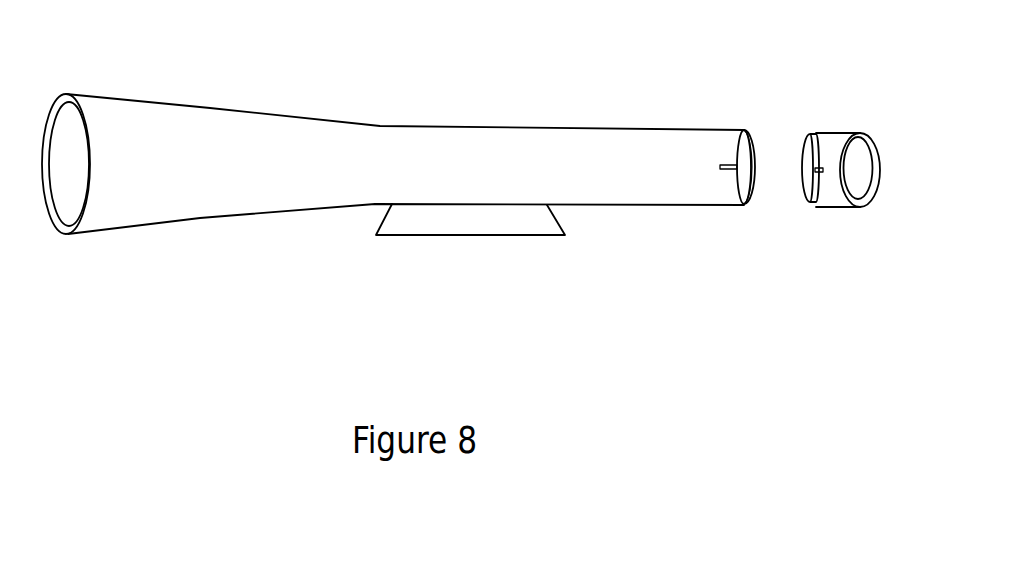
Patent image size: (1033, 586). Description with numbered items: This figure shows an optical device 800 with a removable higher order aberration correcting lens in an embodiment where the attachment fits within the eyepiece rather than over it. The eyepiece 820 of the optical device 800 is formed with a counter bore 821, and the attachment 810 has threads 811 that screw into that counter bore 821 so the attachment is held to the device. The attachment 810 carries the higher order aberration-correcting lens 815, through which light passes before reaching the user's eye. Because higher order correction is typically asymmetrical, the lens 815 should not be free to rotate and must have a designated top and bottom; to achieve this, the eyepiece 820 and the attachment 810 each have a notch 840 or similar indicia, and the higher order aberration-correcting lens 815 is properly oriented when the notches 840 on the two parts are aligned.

The optical device 800 is at (669, 62).
The attachment 810 is at (837, 128).
The threads 811 is at (803, 137).
The higher order aberration-correcting lens 815 is at (857, 167).
The eyepiece 820 is at (737, 187).
The counter bore 821 is at (748, 203).
The notch 840 is at (699, 121).